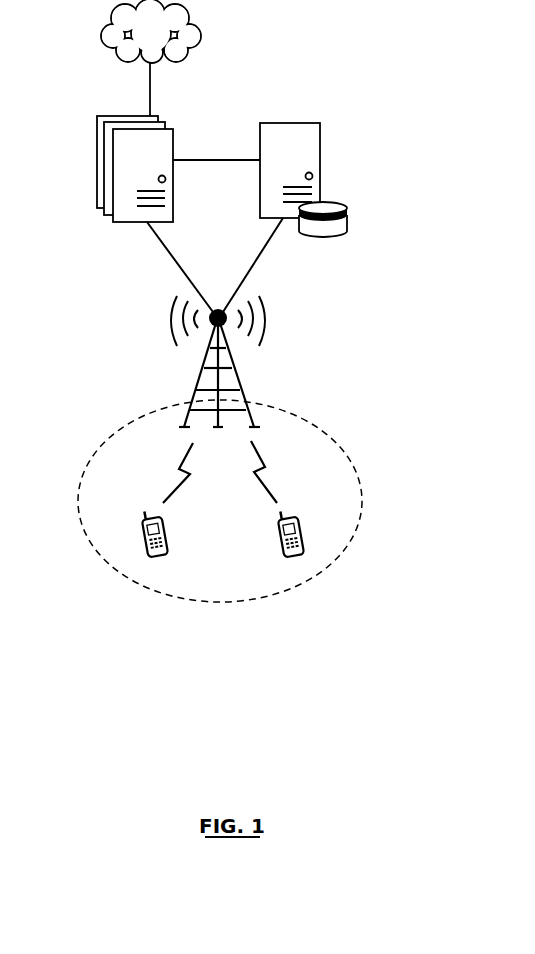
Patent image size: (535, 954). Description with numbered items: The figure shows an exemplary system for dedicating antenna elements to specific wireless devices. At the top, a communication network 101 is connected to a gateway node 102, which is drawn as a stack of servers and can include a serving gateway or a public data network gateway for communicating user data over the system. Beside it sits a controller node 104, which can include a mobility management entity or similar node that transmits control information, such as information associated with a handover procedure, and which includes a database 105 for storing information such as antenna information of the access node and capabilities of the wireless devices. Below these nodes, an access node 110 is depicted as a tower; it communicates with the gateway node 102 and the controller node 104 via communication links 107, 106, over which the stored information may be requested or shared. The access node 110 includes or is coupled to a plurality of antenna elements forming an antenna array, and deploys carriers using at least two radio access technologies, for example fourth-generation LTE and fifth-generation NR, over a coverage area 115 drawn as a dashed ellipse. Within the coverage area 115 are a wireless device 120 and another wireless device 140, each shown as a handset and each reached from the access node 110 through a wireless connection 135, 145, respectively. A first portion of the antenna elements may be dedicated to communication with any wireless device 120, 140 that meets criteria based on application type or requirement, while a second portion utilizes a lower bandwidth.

The communication network 101 is at (165, 42).
The gateway node 102 is at (115, 115).
The controller node 104 is at (322, 122).
The database 105 is at (346, 205).
The communication link 106 is at (258, 256).
The communication link 107 is at (163, 248).
The access node 110 is at (203, 380).
The coverage area 115 is at (130, 580).
The wireless device 120 is at (143, 528).
The wireless link 135 is at (168, 475).
The user equipment 140 is at (305, 525).
The wireless link 145 is at (269, 455).